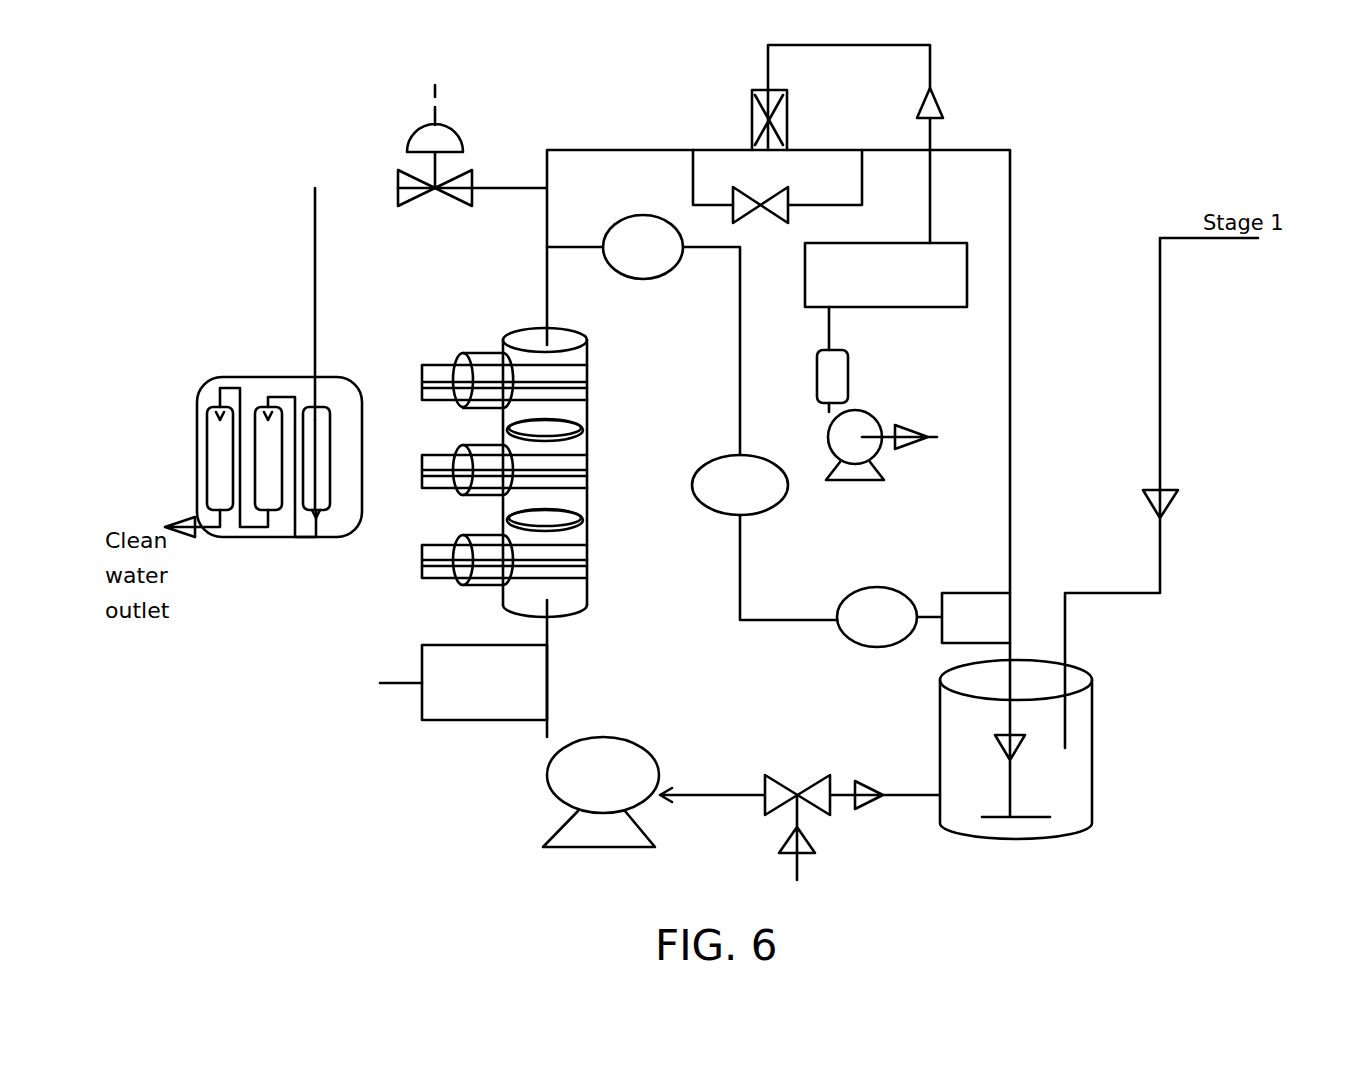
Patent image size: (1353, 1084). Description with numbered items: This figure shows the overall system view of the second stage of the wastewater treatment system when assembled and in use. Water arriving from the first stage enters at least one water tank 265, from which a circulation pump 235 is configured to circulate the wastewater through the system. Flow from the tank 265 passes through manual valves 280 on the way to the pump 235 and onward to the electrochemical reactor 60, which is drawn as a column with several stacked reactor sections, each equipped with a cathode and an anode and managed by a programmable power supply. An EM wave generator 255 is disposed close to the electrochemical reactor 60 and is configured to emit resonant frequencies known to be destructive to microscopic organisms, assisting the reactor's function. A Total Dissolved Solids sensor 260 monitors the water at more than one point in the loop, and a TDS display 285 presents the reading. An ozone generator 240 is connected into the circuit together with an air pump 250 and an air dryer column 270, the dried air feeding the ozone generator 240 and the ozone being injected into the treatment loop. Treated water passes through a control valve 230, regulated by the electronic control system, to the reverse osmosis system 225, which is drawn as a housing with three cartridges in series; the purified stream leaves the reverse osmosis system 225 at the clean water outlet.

The electrochemical reactor 60 is at (553, 372).
The reverse osmosis system 225 is at (268, 440).
The control valve 230 is at (405, 195).
The circulation pump 235 is at (601, 792).
The ozone generator 240 is at (886, 275).
The air pump 250 is at (865, 420).
The EM wave generator 255 is at (463, 682).
The Total Dissolved Solids sensor 260 is at (778, 431).
The water tank 265 is at (1042, 787).
The air dryer column 270 is at (825, 380).
The manual valve 280 is at (760, 205).
The TDS display 285 is at (740, 485).